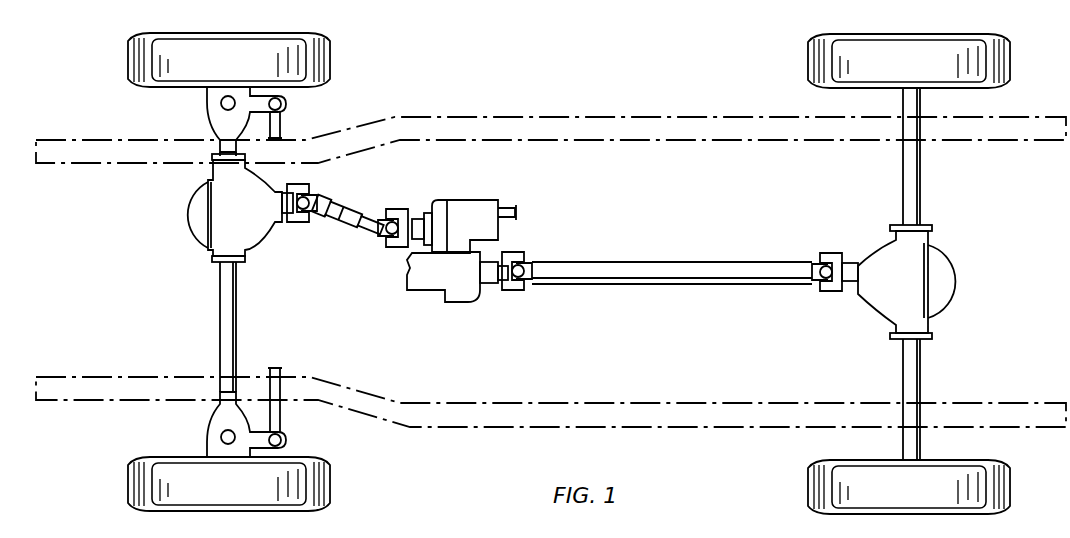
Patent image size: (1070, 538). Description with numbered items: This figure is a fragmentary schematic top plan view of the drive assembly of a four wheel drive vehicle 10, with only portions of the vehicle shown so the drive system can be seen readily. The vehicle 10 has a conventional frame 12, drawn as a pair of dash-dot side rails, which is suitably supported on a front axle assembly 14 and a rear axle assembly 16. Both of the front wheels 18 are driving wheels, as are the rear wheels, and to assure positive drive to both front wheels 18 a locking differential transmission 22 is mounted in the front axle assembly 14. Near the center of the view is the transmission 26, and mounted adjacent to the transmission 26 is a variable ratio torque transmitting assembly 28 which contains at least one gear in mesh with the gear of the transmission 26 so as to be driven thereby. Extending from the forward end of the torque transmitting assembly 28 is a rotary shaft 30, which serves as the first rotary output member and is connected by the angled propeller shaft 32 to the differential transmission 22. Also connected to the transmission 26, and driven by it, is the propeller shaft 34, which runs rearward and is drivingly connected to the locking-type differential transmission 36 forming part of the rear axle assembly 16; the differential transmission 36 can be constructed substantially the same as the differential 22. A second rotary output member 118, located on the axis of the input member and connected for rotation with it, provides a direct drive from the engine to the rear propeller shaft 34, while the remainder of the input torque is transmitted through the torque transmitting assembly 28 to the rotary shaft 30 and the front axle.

The vehicle 10 is at (735, 40).
The frame 12 is at (552, 403).
The front axle assembly 14 is at (238, 317).
The rear axle assembly 16 is at (923, 363).
The front wheels 18 is at (1069, 492).
The differential transmission 22 is at (218, 232).
The transmission 26 is at (433, 278).
The variable ratio torque transmitting assembly 28 is at (470, 203).
The rotary shaft 30 is at (417, 217).
The propeller shaft 32 is at (342, 204).
The propeller shaft 34 is at (667, 270).
The locking-type differential transmission 36 is at (918, 245).
The second rotary output member 118 is at (495, 248).